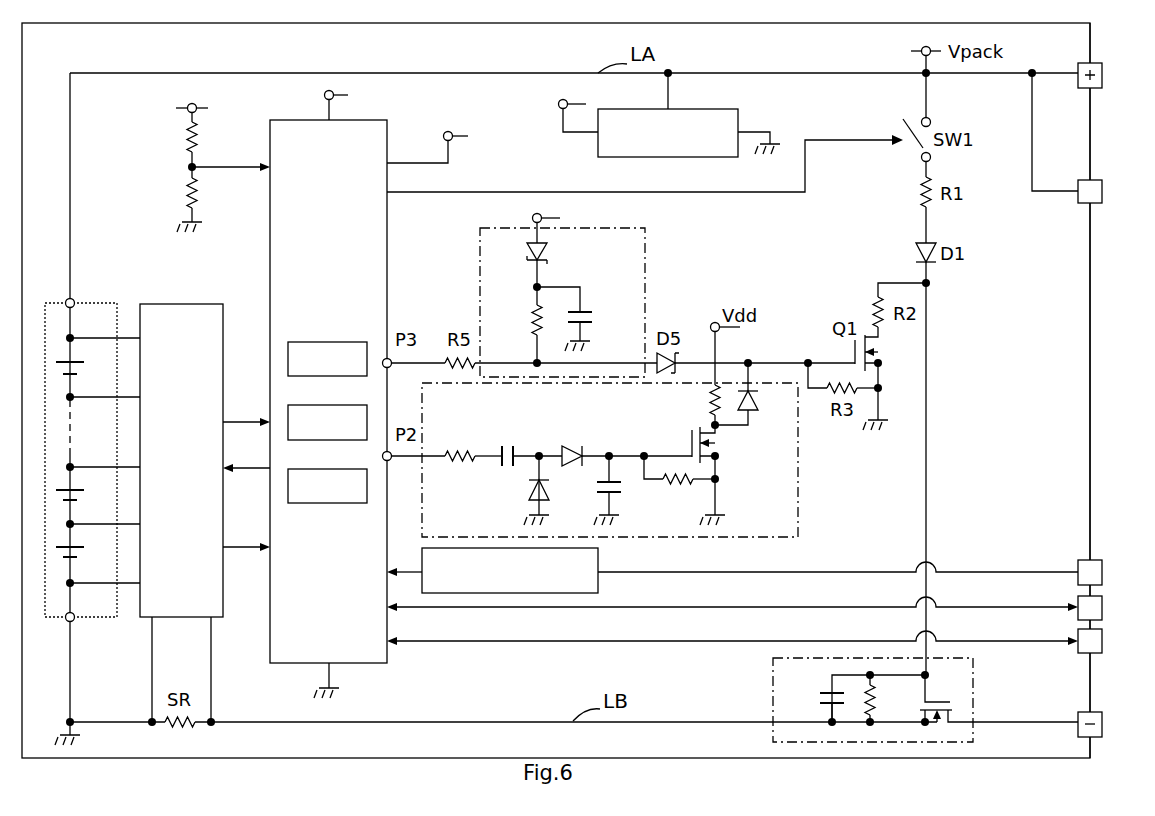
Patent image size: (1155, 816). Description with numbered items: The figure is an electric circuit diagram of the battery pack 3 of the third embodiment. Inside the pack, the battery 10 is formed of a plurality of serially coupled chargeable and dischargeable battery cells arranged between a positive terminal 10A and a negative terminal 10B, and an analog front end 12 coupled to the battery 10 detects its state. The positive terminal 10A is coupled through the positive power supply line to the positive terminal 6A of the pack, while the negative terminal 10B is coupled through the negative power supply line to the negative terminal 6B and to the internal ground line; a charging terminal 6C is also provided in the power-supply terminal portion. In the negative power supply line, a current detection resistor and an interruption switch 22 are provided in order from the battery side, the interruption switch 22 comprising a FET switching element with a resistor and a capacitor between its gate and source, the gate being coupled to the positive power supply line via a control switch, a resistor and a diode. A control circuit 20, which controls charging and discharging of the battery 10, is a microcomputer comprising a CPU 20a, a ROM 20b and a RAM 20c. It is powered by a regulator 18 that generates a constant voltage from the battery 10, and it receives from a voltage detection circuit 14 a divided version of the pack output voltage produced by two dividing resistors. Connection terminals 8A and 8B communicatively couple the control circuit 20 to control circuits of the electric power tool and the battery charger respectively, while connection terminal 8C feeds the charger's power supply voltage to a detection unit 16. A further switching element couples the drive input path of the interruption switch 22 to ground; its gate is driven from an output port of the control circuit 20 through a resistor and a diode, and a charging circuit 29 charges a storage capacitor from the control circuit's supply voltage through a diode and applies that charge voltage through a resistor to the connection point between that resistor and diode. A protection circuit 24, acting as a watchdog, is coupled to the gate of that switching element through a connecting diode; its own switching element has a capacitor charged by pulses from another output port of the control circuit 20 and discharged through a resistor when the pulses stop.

The battery pack 3 is at (76, 59).
The positive terminal 6A is at (1108, 76).
The negative terminal 6B is at (1108, 725).
The charging terminal 6C is at (1108, 192).
The connection terminal 8A is at (1108, 642).
The connection terminal 8B is at (1108, 609).
The connection terminal 8C is at (1108, 573).
The battery 10 is at (81, 447).
The positive terminal of battery 10A is at (74, 299).
The negative terminal of battery 10B is at (74, 621).
The analog front end 12 is at (188, 304).
The voltage detection circuit 14 is at (162, 167).
The detection unit 16 is at (600, 585).
The regulator 18 is at (722, 109).
The control circuit 20 is at (350, 389).
The CPU 20a is at (328, 342).
The ROM 20b is at (328, 405).
The RAM 20c is at (328, 469).
The interruption switch 22 is at (976, 691).
The protection circuit 24 is at (802, 478).
The charging circuit 29 is at (648, 267).